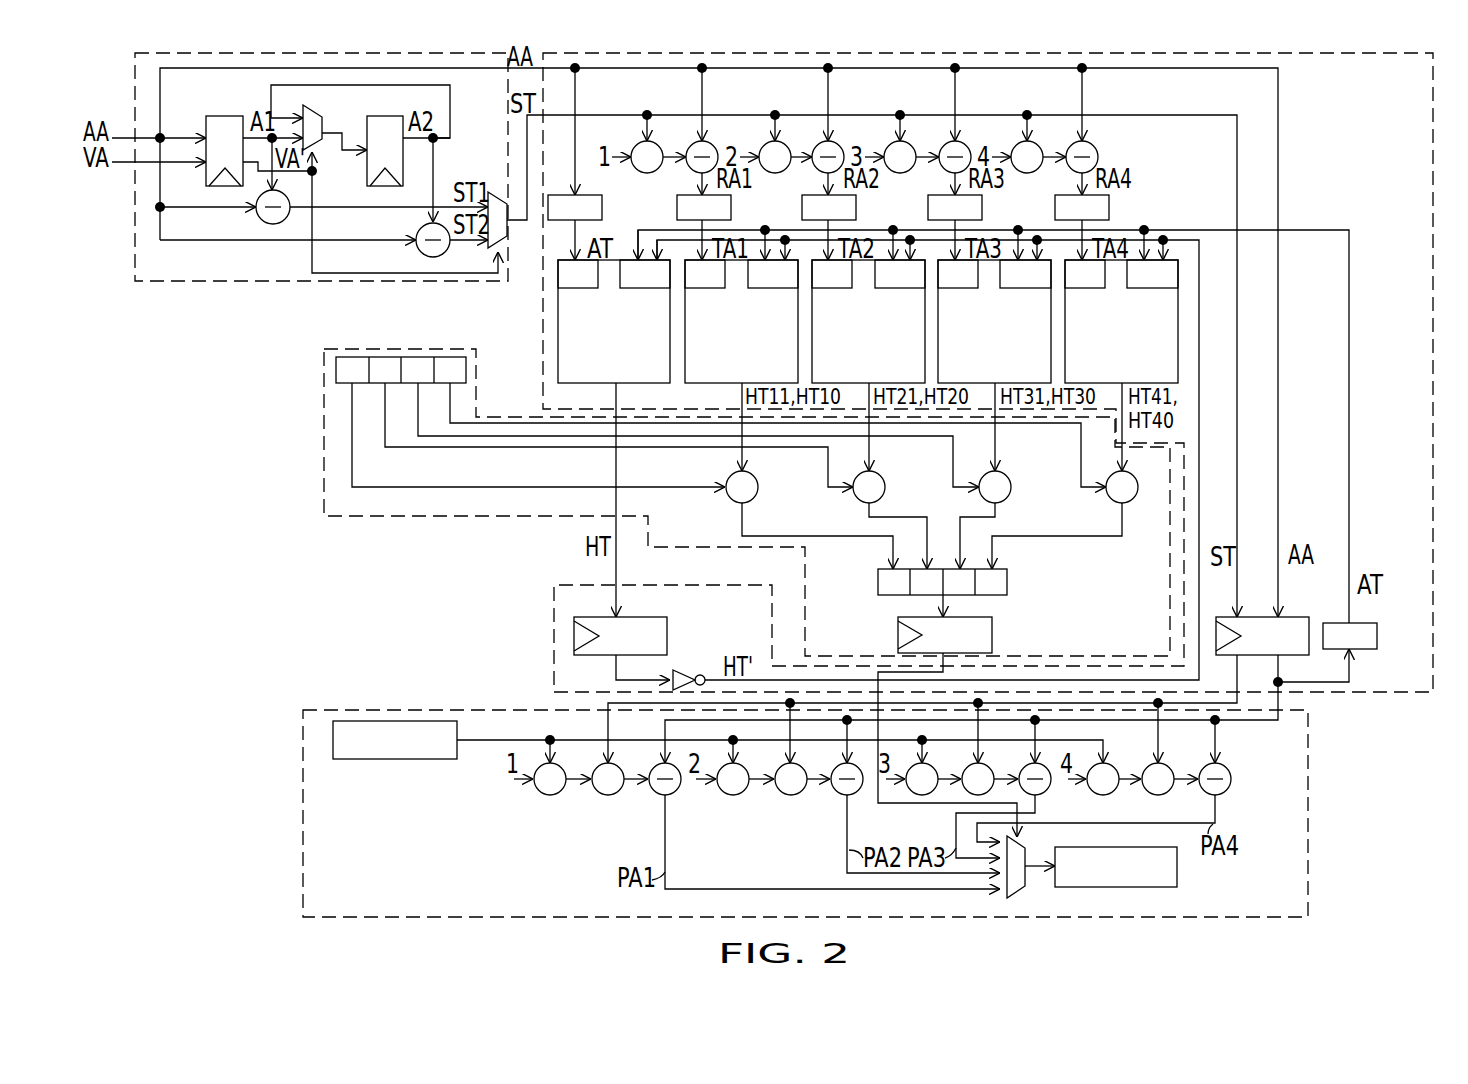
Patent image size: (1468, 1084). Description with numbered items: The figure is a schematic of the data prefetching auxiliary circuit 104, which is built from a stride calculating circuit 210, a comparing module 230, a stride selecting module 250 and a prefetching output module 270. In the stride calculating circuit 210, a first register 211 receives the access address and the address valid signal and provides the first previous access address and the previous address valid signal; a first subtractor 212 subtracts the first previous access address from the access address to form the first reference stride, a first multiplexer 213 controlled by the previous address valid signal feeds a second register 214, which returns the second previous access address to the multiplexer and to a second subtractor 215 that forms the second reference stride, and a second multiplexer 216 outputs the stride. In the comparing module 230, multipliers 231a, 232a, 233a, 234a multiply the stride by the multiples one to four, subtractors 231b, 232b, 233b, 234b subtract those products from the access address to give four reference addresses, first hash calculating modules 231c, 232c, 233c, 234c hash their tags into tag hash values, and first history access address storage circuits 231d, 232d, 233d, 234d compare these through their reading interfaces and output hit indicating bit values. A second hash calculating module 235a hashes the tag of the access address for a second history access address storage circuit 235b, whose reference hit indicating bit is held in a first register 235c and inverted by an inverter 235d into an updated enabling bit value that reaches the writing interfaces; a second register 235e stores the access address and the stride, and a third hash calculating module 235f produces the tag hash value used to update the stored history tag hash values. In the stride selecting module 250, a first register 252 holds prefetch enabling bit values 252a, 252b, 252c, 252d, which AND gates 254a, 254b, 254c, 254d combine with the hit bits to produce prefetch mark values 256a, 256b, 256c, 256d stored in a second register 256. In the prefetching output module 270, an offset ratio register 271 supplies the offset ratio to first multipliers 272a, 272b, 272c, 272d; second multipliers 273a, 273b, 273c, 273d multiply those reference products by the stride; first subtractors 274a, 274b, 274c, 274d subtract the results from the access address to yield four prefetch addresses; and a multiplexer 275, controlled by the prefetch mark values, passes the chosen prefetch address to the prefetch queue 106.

The data prefetching auxiliary circuit 104 is at (878, 815).
The prefetch queue 106 is at (1116, 867).
The stride calculating circuit 210 is at (183, 286).
The first register 211 is at (241, 116).
The first subtractor 212 is at (256, 213).
The first multiplexer 213 is at (318, 110).
The second register 214 is at (393, 116).
The second subtractor 215 is at (418, 250).
The second multiplexer 216 is at (494, 192).
The comparing module 230 is at (1433, 695).
The multiplier 231a is at (632, 148).
The subtractor 231b is at (688, 146).
The first hash calculating module 231c is at (677, 207).
The first history access address storage circuit 231d is at (741, 321).
The multiplier 232a is at (760, 148).
The subtractor 232b is at (815, 146).
The first hash calculating module 232c is at (802, 207).
The first history access address storage circuit 232d is at (868, 321).
The multiplier 233a is at (885, 148).
The subtractor 233b is at (940, 146).
The first hash calculating module 233c is at (928, 207).
The first history access address storage circuit 233d is at (994, 321).
The multiplier 234a is at (1012, 148).
The subtractor 234b is at (1068, 146).
The first hash calculating module 234c is at (1055, 207).
The first history access address storage circuit 234d is at (1121, 321).
The second hash calculating module 235a is at (604, 204).
The second history access address storage circuit 235b is at (614, 321).
The first register 235c is at (574, 634).
The inverter 235d is at (692, 672).
The second register 235e is at (1296, 617).
The third hash calculating module 235f is at (1368, 650).
The stride selecting module 250 is at (393, 519).
The first register 252 is at (333, 398).
The prefetch enabling bit value 252a is at (350, 356).
The prefetch enabling bit value 252b is at (381, 357).
The prefetch enabling bit value 252c is at (415, 357).
The prefetch enabling bit value 252d is at (458, 356).
The AND gate 254a is at (758, 500).
The AND gate 254b is at (885, 500).
The AND gate 254c is at (1012, 500).
The AND gate 254d is at (1110, 502).
The second register 256 is at (992, 641).
The first prefetch mark value 256a is at (878, 586).
The second prefetch mark value 256b is at (920, 597).
The prefetch mark value 256c is at (962, 597).
The prefetch mark value 256d is at (1007, 586).
The prefetching output module 270 is at (1310, 812).
The offset ratio register 271 is at (718, 737).
The first multiplier 272a is at (556, 795).
The first multiplier 272b is at (739, 796).
The first multiplier 272c is at (915, 796).
The first multiplier 272d is at (1110, 795).
The second multiplier 273a is at (613, 795).
The second multiplier 273b is at (797, 795).
The second multiplier 273c is at (970, 796).
The second multiplier 273d is at (1166, 795).
The first subtractor 274a is at (670, 796).
The first subtractor 274b is at (842, 796).
The first subtractor 274c is at (1050, 794).
The first subtractor 274d is at (1225, 793).
The multiplexer 275 is at (1020, 897).